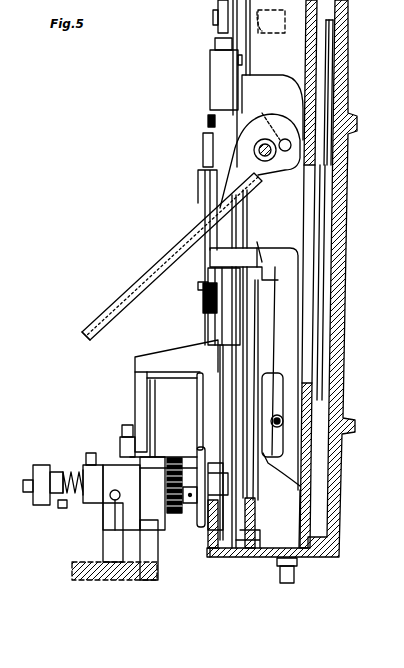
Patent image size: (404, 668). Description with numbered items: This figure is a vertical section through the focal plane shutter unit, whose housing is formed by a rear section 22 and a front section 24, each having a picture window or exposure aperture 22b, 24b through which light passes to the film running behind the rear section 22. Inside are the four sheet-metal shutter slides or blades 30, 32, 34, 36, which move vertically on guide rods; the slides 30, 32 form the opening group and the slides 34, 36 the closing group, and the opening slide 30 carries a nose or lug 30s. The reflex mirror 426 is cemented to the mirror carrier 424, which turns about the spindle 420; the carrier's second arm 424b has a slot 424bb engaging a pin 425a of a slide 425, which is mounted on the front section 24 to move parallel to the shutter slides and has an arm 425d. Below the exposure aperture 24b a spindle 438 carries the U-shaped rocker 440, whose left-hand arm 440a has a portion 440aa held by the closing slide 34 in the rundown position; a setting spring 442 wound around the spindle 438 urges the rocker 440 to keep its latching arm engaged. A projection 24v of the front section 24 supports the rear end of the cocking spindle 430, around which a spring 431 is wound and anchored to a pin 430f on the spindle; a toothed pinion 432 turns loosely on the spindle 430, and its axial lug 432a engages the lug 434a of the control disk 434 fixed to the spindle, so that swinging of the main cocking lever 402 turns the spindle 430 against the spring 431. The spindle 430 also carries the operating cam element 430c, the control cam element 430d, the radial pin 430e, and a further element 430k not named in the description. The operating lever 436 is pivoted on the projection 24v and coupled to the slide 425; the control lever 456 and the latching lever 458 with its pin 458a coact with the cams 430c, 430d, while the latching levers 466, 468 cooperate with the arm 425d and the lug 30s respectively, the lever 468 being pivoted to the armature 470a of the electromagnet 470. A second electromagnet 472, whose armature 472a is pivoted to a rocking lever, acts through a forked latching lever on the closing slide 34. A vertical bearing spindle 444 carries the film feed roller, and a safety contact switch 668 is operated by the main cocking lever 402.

The rear section 22 is at (342, 430).
The exposure aperture 22b is at (290, 357).
The front section 24 is at (320, 511).
The exposure aperture 24b is at (308, 328).
The projection 24v is at (213, 557).
The opening slide 30 is at (318, 296).
The lug 30s is at (217, 257).
The slide 32 is at (322, 246).
The closing slide 34 is at (330, 60).
The slide 36 is at (331, 36).
The main cocking lever 402 is at (252, 557).
The spindle 420 is at (253, 148).
The mirror carrier 424 is at (80, 336).
The second arm 424b is at (291, 153).
The slot 424bb is at (269, 75).
The slide 425 is at (210, 90).
The pin 425a is at (295, 140).
The arm 425d is at (135, 362).
The reflex mirror 426 is at (110, 305).
The cocking spindle 430 is at (96, 503).
The operating cam element 430c is at (152, 582).
The control cam element 430d is at (125, 580).
The pin 430e is at (105, 570).
The pin 430f is at (86, 457).
The knob 430k is at (45, 508).
The spring 431 is at (67, 525).
The toothed pinion 432 is at (167, 460).
The axial projection 432a is at (185, 466).
The control disk 434 is at (199, 530).
The lug 434a is at (185, 505).
The operating lever 436 is at (200, 385).
The spindle 438 is at (280, 410).
The U-shaped rocker 440 is at (338, 400).
The left-hand arm 440a is at (306, 357).
The portion 440aa is at (262, 234).
The setting spring 442 is at (300, 468).
The bearing spindle 444 is at (287, 583).
The control lever 456 is at (122, 448).
The latching lever 458 is at (140, 392).
The pin 458a is at (122, 430).
The latching lever 466 is at (208, 330).
The latching lever 468 is at (203, 297).
The electromagnet 470 is at (207, 237).
The armature 470a is at (198, 288).
The electromagnet 472 is at (208, 66).
The armature 472a is at (215, 40).
The safety contact switch 668 is at (226, 548).